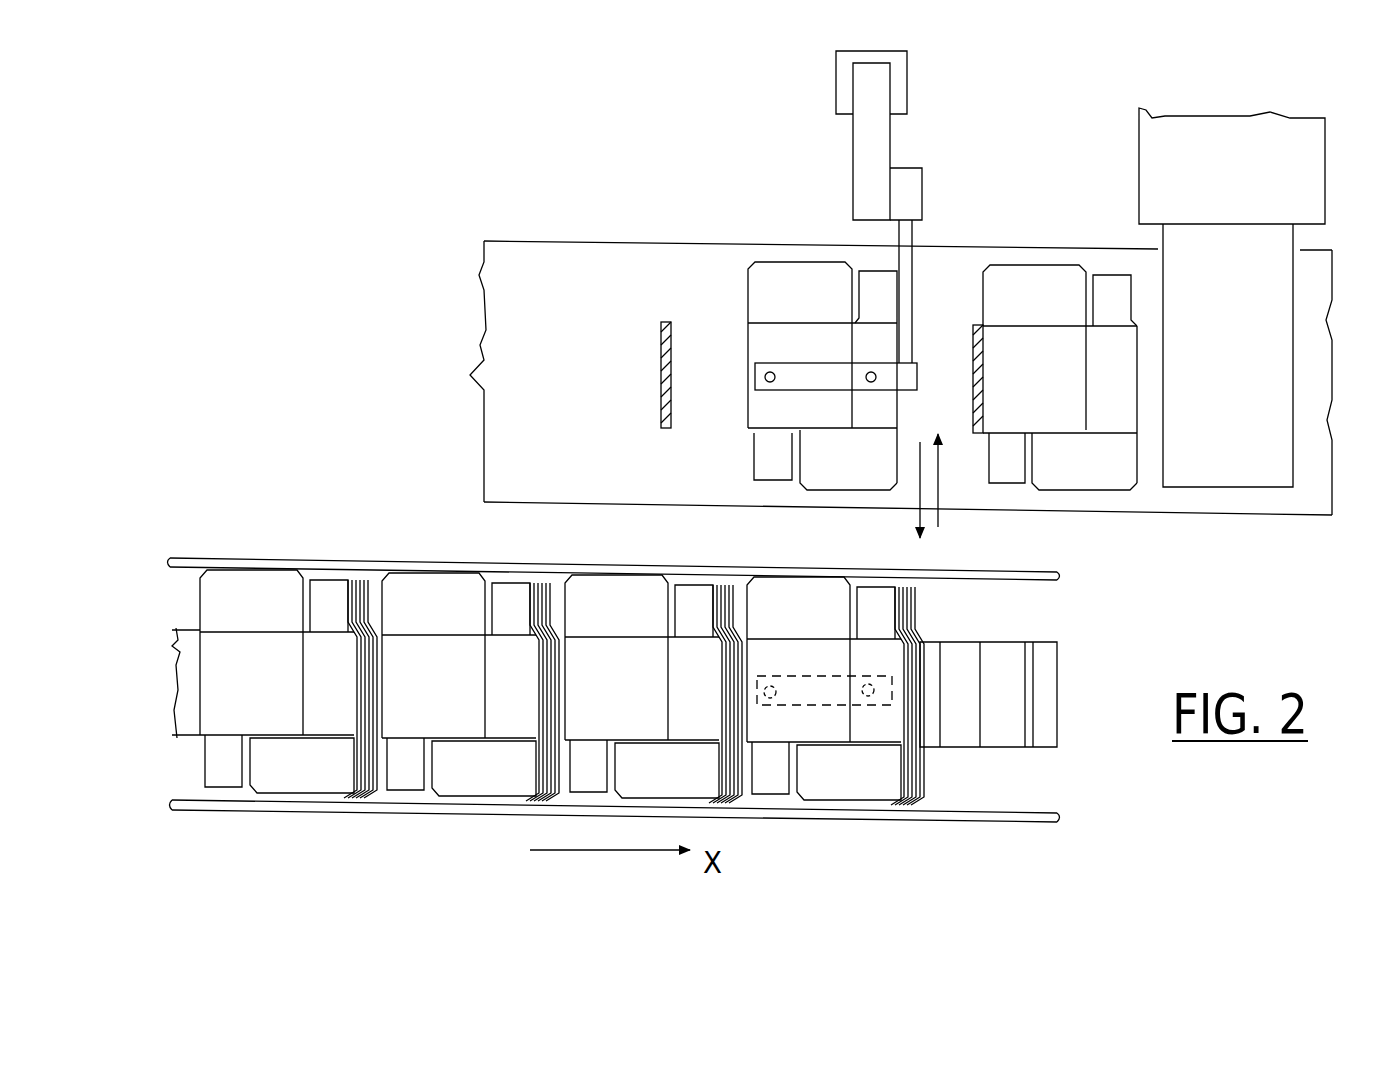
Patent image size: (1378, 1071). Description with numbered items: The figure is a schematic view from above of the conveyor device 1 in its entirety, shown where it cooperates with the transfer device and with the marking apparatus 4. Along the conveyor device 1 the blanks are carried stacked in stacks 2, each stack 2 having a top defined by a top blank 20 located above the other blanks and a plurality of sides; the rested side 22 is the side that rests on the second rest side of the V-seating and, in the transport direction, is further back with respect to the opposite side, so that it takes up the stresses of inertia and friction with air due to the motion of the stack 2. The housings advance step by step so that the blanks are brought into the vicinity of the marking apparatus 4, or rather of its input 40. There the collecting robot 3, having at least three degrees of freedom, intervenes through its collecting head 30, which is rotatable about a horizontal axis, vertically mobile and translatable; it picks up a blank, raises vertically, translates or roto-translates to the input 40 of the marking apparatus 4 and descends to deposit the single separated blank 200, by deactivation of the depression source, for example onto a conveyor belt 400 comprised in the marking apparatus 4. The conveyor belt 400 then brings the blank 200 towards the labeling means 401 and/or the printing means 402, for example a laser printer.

The conveyor device 1 is at (431, 824).
The stack 2 is at (492, 571).
The collecting robot 3 is at (948, 134).
The marking apparatus 4 is at (388, 200).
The top blank 20 is at (263, 650).
The rested side 22 is at (383, 597).
The collecting head 30 is at (810, 372).
The input 40 is at (647, 225).
The blank 200 is at (1046, 285).
The conveyor belt 400 is at (533, 262).
The labeling means 401 is at (1215, 138).
The printing means 402 is at (1232, 297).